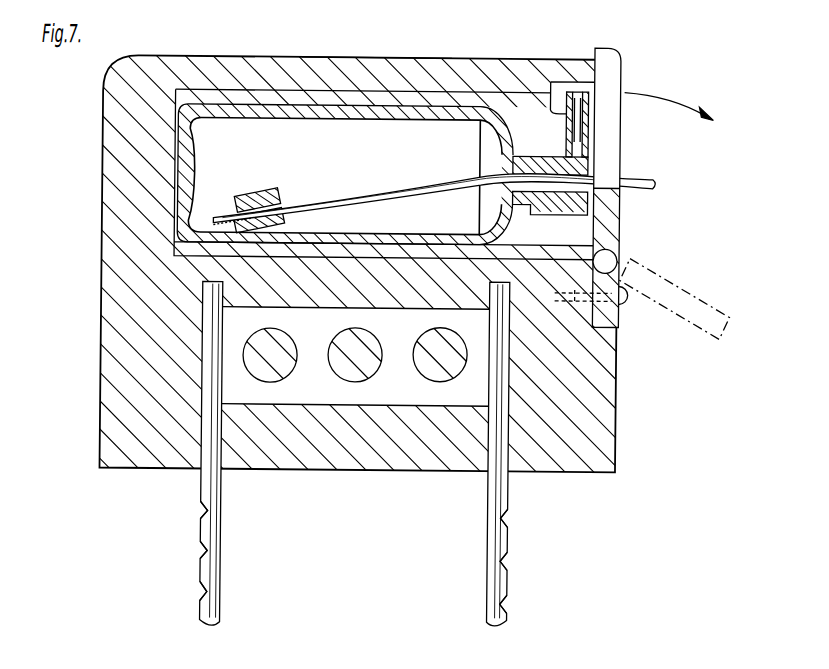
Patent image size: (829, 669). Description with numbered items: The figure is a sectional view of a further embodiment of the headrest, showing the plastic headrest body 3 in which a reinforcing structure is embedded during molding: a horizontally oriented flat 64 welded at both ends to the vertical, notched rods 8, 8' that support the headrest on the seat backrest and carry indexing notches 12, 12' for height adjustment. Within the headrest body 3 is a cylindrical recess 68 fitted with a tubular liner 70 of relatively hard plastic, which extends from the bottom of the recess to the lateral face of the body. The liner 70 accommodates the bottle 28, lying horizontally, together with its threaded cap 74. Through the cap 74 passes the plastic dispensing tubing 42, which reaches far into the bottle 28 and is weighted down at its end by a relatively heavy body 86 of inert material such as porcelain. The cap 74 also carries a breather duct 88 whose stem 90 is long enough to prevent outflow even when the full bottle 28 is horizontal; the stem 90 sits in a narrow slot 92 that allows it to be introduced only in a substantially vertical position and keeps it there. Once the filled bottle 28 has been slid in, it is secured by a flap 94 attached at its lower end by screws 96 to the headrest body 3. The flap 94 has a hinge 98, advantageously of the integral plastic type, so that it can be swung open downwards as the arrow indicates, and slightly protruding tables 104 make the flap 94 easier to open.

The headrest body 3 is at (583, 417).
The rod 8 is at (193, 453).
The rod 8' is at (522, 454).
The indexing notches 12 is at (164, 551).
The indexing notches 12' is at (540, 577).
The bottle 28 is at (318, 110).
The dispensing tubing 42 is at (656, 177).
The flat 64 is at (324, 392).
The cylindrical recess 68 is at (258, 94).
The tubular liner 70 is at (369, 96).
The threaded cap 74 is at (566, 205).
The heavy body 86 is at (266, 195).
The breather duct 88 is at (574, 134).
The stem 90 is at (585, 146).
The slot 92 is at (567, 84).
The flap 94 is at (610, 216).
The screws 96 is at (625, 305).
The hinge 98 is at (608, 249).
The tables 104 is at (610, 65).